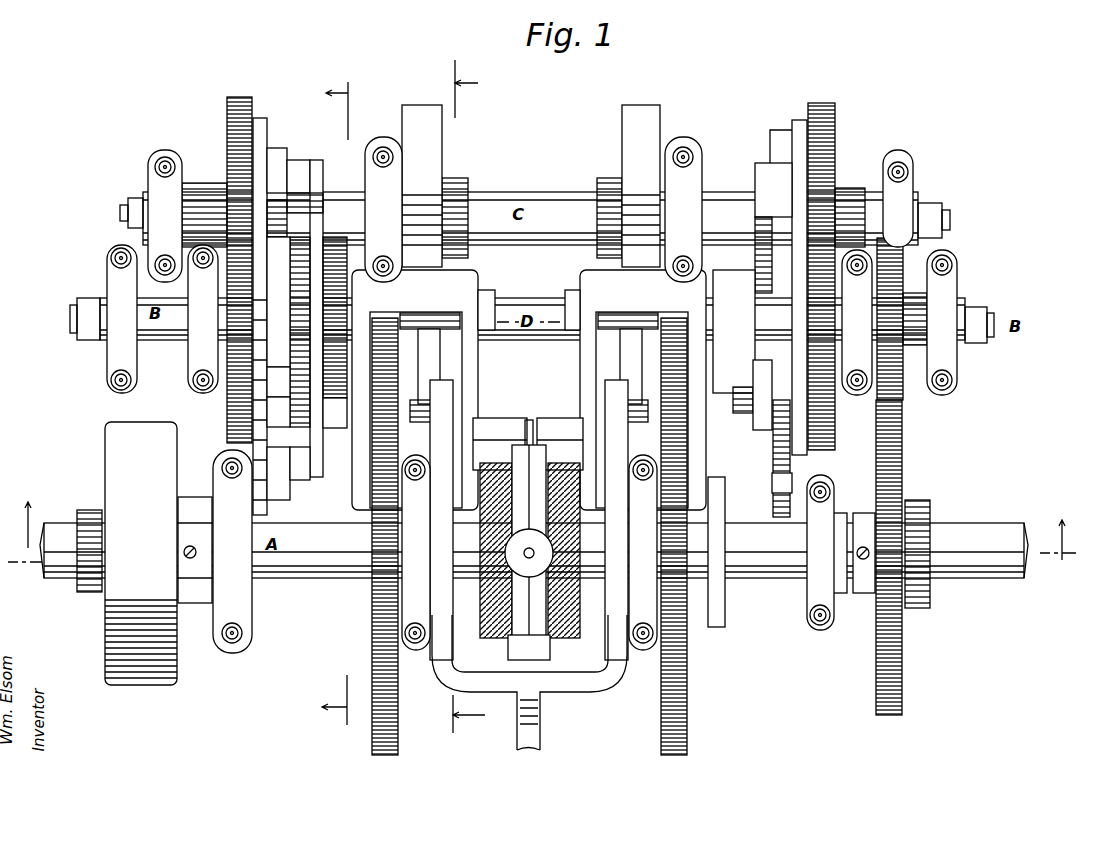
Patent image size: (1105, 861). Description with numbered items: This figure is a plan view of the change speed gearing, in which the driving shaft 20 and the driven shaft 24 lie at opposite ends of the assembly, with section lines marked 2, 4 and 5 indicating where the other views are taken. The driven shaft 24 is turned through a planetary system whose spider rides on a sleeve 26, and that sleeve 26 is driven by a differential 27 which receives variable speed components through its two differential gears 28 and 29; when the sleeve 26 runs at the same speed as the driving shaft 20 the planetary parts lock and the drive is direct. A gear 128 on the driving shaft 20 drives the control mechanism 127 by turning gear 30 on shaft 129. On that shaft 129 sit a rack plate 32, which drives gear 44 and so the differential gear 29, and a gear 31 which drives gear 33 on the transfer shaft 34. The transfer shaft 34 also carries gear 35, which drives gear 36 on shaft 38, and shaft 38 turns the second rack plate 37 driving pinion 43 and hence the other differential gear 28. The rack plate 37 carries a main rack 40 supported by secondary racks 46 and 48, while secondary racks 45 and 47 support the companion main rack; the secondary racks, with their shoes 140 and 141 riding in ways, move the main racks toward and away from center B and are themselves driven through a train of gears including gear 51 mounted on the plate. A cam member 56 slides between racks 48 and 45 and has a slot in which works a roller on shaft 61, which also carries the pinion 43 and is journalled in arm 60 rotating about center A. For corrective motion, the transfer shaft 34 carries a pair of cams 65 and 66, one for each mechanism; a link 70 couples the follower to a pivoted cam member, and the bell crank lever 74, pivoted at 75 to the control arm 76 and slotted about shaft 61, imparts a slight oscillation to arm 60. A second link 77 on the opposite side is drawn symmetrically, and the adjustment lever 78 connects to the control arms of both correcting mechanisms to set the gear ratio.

The driving shaft 20 is at (960, 527).
The driven shaft 24 is at (50, 528).
The sleeve 26 is at (534, 550).
The differential 27 is at (530, 552).
The differential gear 28 is at (398, 750).
The differential gear 29 is at (688, 746).
The gear 30 is at (905, 292).
The gear 31 is at (876, 302).
The rack plate 32 is at (790, 140).
The gear 33 is at (836, 125).
The transfer shaft 34 is at (545, 197).
The gear 35 is at (240, 97).
The gear 36 is at (226, 398).
The rack plate 37 is at (262, 120).
The shaft 38 is at (70, 319).
The main rack 40 is at (307, 299).
The pinion 43 is at (383, 318).
The gear 44 is at (670, 320).
The secondary rack 45 is at (305, 222).
The secondary rack 46 is at (300, 162).
The secondary rack 47 is at (297, 473).
The secondary rack 48 is at (303, 413).
The gear 51 is at (278, 317).
The cam member 56 is at (299, 332).
The arm 60 is at (415, 390).
The shaft 61 is at (497, 313).
The cam 65 is at (415, 112).
The cam 66 is at (640, 112).
The link 70 is at (445, 412).
The bell crank lever 74 is at (430, 380).
The pivot 75 is at (400, 425).
The control arm 76 is at (440, 427).
The link 77 is at (628, 652).
The adjustment lever 78 is at (541, 716).
The control mechanism 127 is at (505, 113).
The gear 128 is at (903, 452).
The shaft 129 is at (992, 320).
The shoe 140 is at (276, 152).
The shoe 141 is at (277, 412).
The section line 2- 2 is at (543, 528).
The section line 4- 4 is at (469, 396).
The section line 5- 5 is at (322, 398).